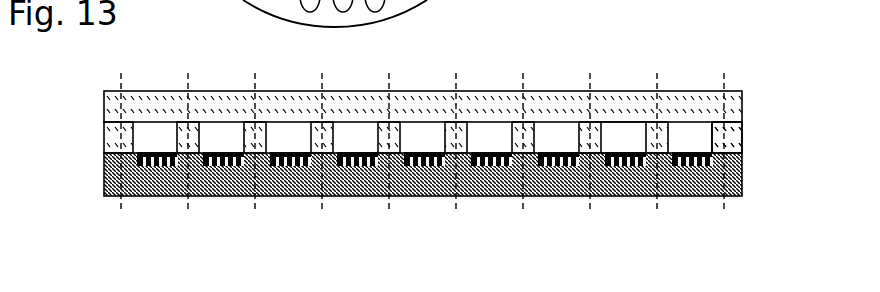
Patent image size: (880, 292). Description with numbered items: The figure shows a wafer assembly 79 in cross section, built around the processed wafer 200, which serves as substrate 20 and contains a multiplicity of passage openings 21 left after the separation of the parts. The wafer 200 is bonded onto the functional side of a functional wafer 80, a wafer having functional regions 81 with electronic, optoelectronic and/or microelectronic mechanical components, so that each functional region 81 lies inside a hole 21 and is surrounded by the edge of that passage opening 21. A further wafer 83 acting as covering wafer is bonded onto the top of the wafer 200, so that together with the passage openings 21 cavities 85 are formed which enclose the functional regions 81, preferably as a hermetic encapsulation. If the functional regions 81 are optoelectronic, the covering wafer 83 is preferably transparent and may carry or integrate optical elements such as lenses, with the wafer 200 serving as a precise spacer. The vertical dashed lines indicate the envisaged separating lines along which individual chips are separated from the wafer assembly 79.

The wafer assembly 79 is at (48, 116).
The functional wafer 80 is at (104, 195).
The functional regions 81 is at (352, 168).
The covering wafer 83 is at (553, 93).
The cavities 85 is at (640, 122).
The passage openings 21 is at (175, 137).
The substrate 20 is at (737, 137).
The wafer 200 is at (769, 143).